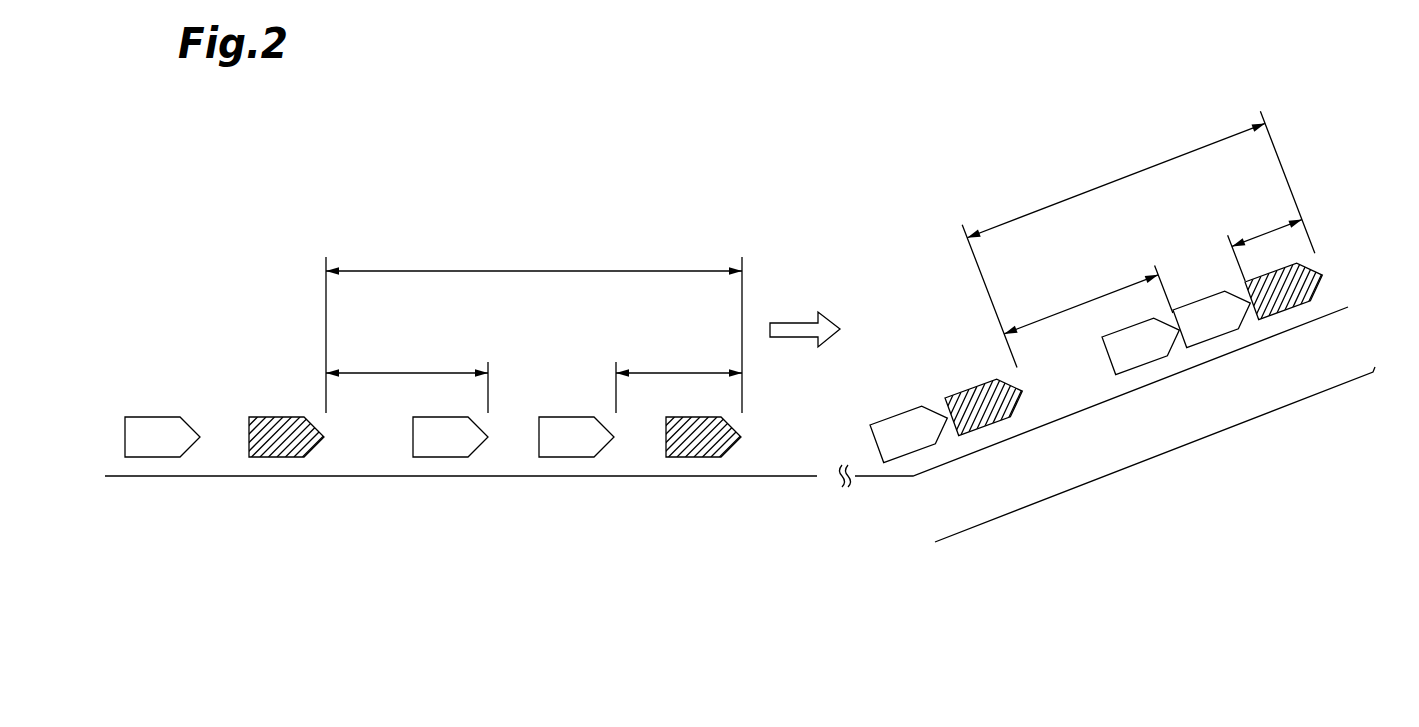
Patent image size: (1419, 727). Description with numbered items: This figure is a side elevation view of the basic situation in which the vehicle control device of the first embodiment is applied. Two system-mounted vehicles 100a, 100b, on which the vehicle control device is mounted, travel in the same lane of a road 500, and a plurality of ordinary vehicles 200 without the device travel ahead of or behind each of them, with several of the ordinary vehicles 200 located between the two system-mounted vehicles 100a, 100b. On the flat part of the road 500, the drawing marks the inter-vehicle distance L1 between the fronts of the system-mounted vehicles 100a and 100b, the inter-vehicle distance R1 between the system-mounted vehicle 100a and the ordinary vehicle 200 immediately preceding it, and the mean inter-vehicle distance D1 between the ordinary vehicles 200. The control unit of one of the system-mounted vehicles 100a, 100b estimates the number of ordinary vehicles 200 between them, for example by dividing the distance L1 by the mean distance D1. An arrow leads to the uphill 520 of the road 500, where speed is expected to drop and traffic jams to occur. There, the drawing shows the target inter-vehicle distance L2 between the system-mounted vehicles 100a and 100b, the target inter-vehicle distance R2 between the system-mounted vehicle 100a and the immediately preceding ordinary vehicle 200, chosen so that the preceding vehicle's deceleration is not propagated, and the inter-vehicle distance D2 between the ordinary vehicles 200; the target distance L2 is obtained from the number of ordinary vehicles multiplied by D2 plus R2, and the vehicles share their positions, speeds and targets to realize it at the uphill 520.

The system-mounted vehicle 100a is at (285, 457).
The system-mounted vehicle 100b is at (700, 457).
The ordinary vehicle 200 is at (447, 457).
The road 500 is at (816, 472).
The uphill 520 is at (1161, 455).
The inter-vehicle distance between the system-mounted vehicles L1 is at (507, 268).
The inter-vehicle distance between the system-mounted vehicle and immediately preced R1 is at (410, 370).
The mean inter-vehicle distance between the ordinary vehicles D1 is at (672, 370).
The target inter-vehicle distance between the system-mounted vehicles L2 is at (1120, 178).
The target inter-vehicle distance R2 is at (1073, 305).
The inter-vehicle distance between the ordinary vehicles at the uphill D2 is at (1265, 232).